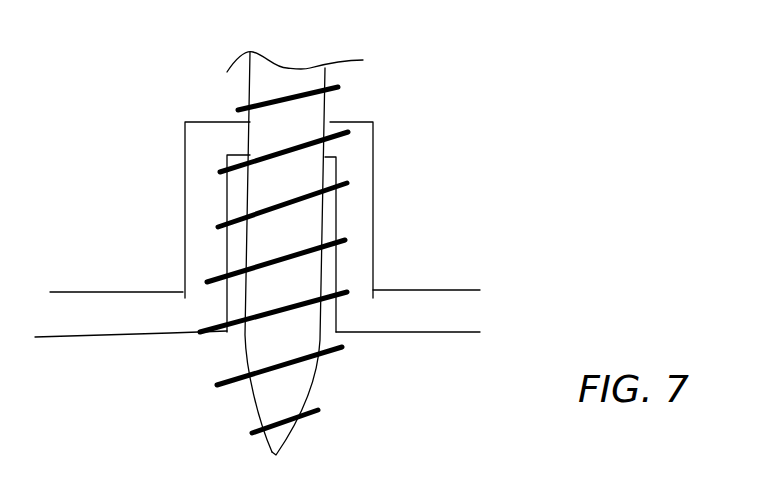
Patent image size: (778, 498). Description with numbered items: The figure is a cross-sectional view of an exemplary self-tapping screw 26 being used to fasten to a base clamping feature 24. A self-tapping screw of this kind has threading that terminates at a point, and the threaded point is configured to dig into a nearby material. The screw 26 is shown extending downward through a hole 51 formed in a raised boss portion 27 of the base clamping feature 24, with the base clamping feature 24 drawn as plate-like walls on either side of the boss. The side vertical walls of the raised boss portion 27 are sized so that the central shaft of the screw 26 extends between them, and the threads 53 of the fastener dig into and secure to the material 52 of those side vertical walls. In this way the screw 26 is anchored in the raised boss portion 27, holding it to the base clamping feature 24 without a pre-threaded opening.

The base clamping feature 24 is at (417, 318).
The self-tapping screw 26 is at (285, 83).
The raised boss portion 27 is at (360, 205).
The hole 51 is at (333, 112).
The material 52 is at (220, 248).
The threads 53 is at (277, 147).